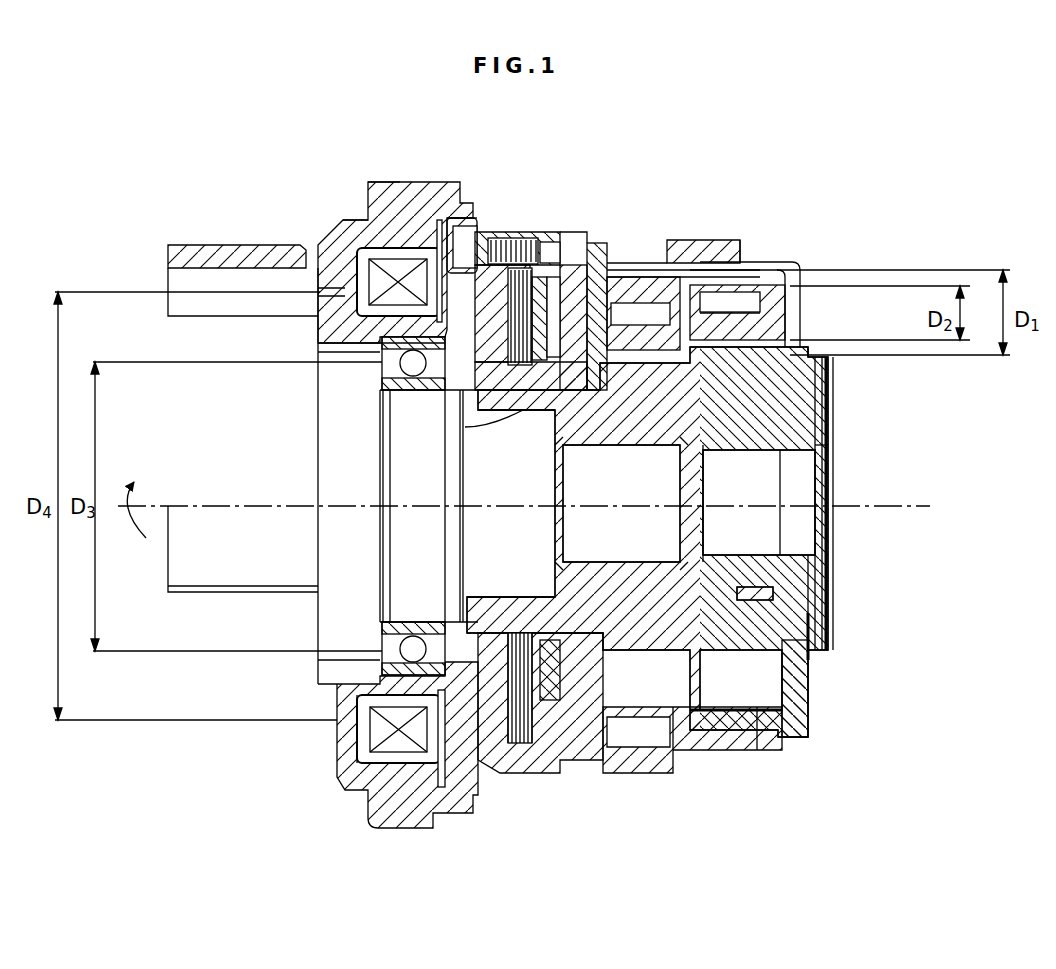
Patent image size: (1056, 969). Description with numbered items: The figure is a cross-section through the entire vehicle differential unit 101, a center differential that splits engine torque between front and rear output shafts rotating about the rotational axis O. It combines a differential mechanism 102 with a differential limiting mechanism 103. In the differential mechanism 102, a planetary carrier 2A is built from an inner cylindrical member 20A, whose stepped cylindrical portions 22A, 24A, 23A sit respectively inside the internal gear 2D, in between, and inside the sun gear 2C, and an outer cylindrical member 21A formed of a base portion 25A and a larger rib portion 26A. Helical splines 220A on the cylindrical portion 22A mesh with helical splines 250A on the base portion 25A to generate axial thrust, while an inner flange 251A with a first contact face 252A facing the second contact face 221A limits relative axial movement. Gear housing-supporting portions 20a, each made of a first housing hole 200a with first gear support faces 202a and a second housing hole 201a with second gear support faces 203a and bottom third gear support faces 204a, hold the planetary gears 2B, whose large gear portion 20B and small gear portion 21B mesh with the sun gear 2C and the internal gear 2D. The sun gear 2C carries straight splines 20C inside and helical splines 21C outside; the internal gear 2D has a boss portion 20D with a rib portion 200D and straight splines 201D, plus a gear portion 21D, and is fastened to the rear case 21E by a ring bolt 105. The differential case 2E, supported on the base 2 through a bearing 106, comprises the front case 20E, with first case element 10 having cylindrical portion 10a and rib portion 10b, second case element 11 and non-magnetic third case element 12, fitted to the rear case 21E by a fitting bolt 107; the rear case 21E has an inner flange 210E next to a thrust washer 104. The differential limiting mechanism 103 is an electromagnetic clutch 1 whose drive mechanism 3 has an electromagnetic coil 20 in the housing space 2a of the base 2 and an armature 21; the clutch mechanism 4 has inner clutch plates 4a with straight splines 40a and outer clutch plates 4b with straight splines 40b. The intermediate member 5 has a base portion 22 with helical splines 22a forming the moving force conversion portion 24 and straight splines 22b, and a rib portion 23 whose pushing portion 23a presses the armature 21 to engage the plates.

The vehicle differential unit 101 is at (262, 168).
The electromagnetic clutch 1 is at (508, 840).
The base 2 is at (247, 262).
The housing space 2a is at (330, 287).
The planetary carrier 2A is at (876, 360).
The planetary gears 2B is at (736, 156).
The sun gear 2C is at (468, 522).
The internal gear 2D is at (876, 663).
The differential case 2E is at (605, 156).
The drive mechanism 3 is at (282, 724).
The clutch mechanism 4 is at (506, 762).
The inner clutch plates 4a is at (499, 775).
The outer clutch plates 4b is at (521, 742).
The intermediate member 5 is at (549, 772).
The first case element 10 is at (375, 627).
The cylindrical portion 10a is at (390, 662).
The rib portion 10b is at (509, 232).
The second case element 11 is at (380, 797).
The third case element 12 is at (385, 718).
The electromagnetic coil 20 is at (380, 740).
The armature 21 is at (395, 762).
The base portion 22 is at (395, 372).
The helical splines 22a is at (395, 422).
The straight splines 22b is at (390, 353).
The rib portion 23 is at (365, 252).
The pushing portion 23a is at (398, 232).
The moving force conversion portion 24 is at (254, 393).
The helical splines 21C is at (395, 398).
The straight splines 20C is at (467, 575).
The straight splines 40a is at (395, 318).
The straight splines 40b is at (458, 213).
The bearing 106 is at (385, 683).
The fitting bolt 107 is at (462, 248).
The differential mechanism 102 is at (744, 262).
The differential limiting mechanism 103 is at (556, 784).
The thrust washer 104 is at (592, 268).
The ring bolt 105 is at (722, 242).
The front case 20E is at (460, 217).
The rear case 21E is at (568, 248).
The inner flange 210E is at (556, 240).
The gear portion 20B is at (662, 240).
The gear portion 21B is at (700, 250).
The rib portion 26A is at (624, 246).
The inner flange 251A is at (782, 272).
The first contact face 252A is at (802, 263).
The base portion 25A is at (792, 333).
The third gear support faces 204a is at (792, 312).
The outer cylindrical member 21A is at (834, 367).
The inner cylindrical member 20A is at (822, 393).
The cylindrical portion 22A is at (829, 416).
The helical splines 220A is at (830, 438).
The helical splines 250A is at (830, 458).
The second contact face 221A is at (830, 484).
The cylindrical portion 23A is at (646, 433).
The cylindrical portion 24A is at (717, 433).
The straight splines 201D is at (782, 515).
The boss portion 20D is at (786, 577).
The gear portion 21D is at (830, 626).
The rib portion 200D is at (792, 676).
The second gear support faces 203a is at (760, 695).
The first gear support faces 202a is at (618, 735).
The first housing hole 200a is at (682, 745).
The second housing hole 201a is at (749, 697).
The gear housing-supporting portions 20a is at (792, 810).
The rotational axis O is at (921, 509).